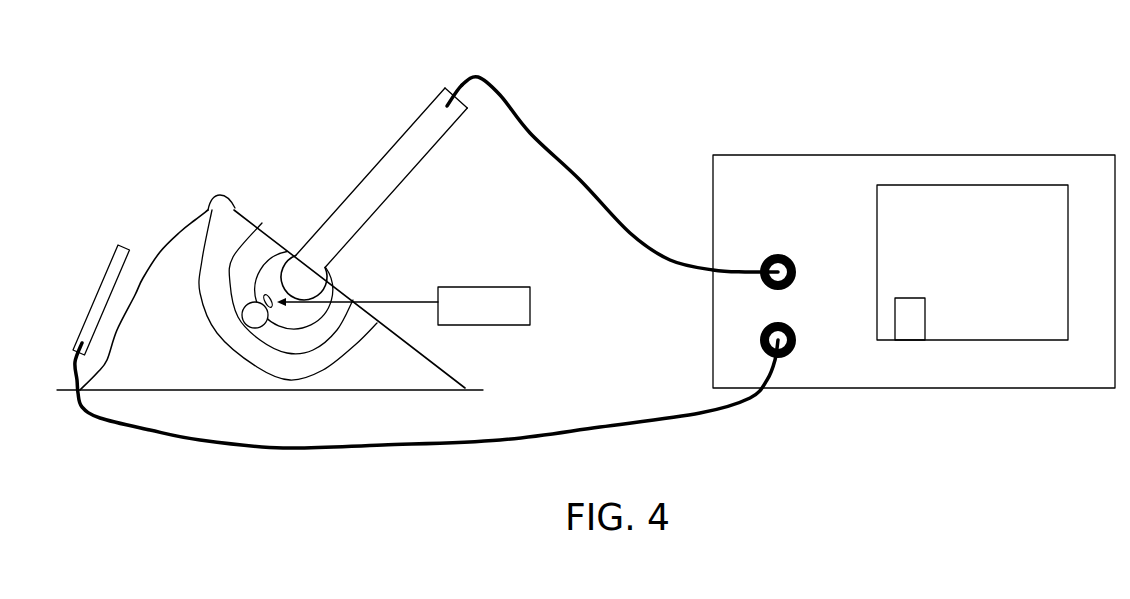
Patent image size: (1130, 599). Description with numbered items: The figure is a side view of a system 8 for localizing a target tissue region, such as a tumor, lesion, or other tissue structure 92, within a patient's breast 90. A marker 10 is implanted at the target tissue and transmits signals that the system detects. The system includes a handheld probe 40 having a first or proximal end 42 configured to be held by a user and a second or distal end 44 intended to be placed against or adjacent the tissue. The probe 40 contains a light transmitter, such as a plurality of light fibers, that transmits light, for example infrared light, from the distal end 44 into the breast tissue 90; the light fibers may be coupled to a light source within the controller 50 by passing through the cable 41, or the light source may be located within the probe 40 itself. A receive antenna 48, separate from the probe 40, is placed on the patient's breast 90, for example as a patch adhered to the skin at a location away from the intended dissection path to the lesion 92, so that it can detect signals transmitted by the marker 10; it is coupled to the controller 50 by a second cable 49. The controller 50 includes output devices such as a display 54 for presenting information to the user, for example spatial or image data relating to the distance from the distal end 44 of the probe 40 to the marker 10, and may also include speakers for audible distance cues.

The system 8 is at (563, 80).
The marker 10 is at (413, 306).
The probe 40 is at (335, 151).
The cable 41 is at (583, 174).
The proximal end 42 is at (458, 115).
The distal end 44 is at (331, 263).
The receive antenna 48 is at (61, 284).
The cable 49 is at (500, 444).
The controller 50 is at (885, 146).
The display 54 is at (1012, 330).
The breast 90 is at (177, 232).
The tumor, lesion, or other tissue structure 92 is at (265, 327).